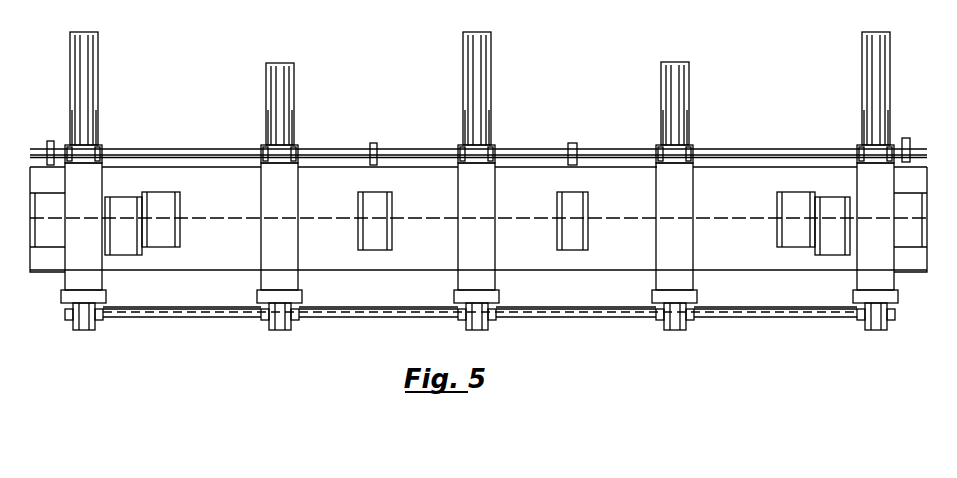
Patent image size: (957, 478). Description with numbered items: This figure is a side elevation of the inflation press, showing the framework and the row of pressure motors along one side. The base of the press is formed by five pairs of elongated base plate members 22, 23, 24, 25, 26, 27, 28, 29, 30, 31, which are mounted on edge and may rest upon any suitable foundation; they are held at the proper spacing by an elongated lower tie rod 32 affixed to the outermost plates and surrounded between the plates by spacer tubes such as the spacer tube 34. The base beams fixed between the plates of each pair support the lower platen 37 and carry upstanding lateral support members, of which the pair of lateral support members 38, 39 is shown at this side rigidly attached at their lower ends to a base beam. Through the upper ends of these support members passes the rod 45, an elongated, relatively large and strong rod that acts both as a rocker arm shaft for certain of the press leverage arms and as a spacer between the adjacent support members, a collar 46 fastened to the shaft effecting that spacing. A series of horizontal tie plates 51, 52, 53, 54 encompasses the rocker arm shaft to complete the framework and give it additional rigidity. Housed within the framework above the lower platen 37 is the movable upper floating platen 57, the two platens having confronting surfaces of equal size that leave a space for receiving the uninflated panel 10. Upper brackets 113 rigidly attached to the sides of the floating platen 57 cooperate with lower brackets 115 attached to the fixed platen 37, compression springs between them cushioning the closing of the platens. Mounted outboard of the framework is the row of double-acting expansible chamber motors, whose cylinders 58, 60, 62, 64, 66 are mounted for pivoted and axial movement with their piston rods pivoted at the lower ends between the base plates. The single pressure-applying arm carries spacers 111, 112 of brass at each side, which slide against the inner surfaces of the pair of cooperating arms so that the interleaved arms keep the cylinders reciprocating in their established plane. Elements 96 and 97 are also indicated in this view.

The uninflated panel 10 is at (624, 217).
The base plate member 22 is at (893, 321).
The base plate member 23 is at (860, 321).
The base plate member 24 is at (689, 322).
The base plate member 25 is at (661, 321).
The base plate member 26 is at (490, 322).
The base plate member 27 is at (462, 321).
The base plate member 28 is at (294, 322).
The base plate member 29 is at (264, 321).
The base plate member 30 is at (98, 322).
The base plate member 31 is at (68, 321).
The lower tie rod 32 is at (772, 317).
The spacer tube 34 is at (808, 318).
The lower platen 37 is at (215, 270).
The lateral support member 38 is at (861, 146).
The lateral support member 39 is at (894, 147).
The rod 45 is at (741, 150).
The collar 46 is at (856, 146).
The horizontal tie plate 51 is at (911, 140).
The horizontal tie plate 52 is at (574, 143).
The horizontal tie plate 53 is at (373, 143).
The horizontal tie plate 54 is at (51, 142).
The upper floating platen 57 is at (208, 185).
The cylinder 58 is at (77, 250).
The cylinder 60 is at (273, 250).
The cylinder 62 is at (470, 250).
The cylinder 64 is at (668, 250).
The cylinder 66 is at (869, 250).
The piston rod 96 is at (890, 76).
The cylinder 97 is at (862, 73).
The spacer 111 is at (862, 40).
The spacer 112 is at (890, 40).
The upper bracket 113 is at (156, 200).
The lower bracket 115 is at (152, 248).